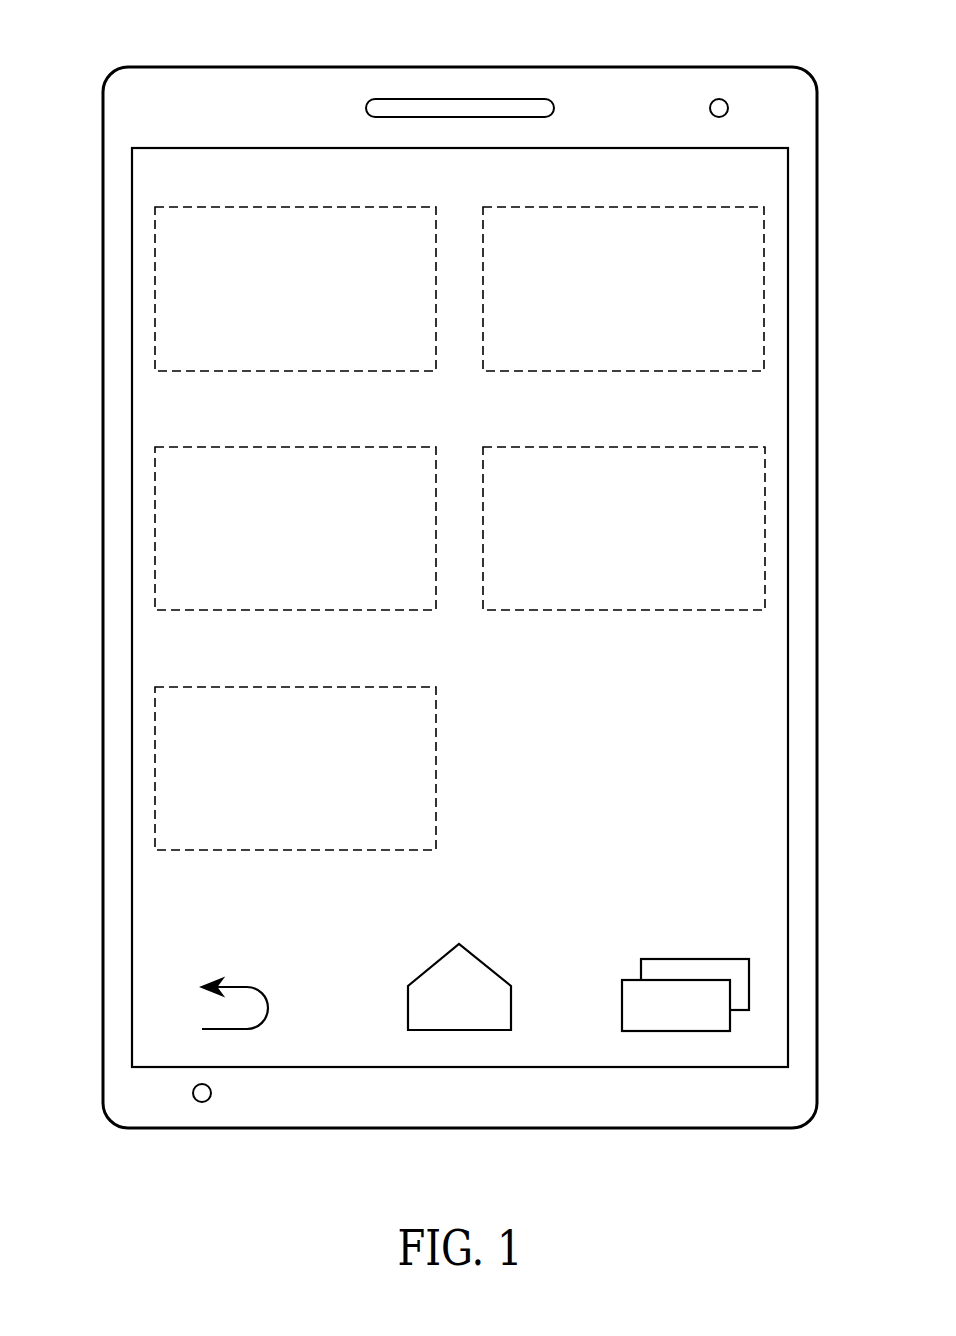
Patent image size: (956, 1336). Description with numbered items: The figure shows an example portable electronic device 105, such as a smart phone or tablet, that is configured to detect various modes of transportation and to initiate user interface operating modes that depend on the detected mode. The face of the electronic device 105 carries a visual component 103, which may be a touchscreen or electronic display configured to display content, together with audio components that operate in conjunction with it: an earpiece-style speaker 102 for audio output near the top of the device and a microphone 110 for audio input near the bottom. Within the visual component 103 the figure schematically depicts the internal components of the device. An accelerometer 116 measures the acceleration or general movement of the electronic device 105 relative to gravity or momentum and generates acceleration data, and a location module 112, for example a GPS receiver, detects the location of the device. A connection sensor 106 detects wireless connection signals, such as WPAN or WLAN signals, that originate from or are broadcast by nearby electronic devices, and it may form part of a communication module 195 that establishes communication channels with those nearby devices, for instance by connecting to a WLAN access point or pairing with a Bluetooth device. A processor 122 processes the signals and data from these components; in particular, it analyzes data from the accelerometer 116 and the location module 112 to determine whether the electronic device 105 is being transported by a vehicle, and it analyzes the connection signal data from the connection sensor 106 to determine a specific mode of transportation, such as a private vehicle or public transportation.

The electronic device 105 is at (280, 66).
The speaker 102 is at (453, 108).
The visual component 103 is at (608, 695).
The microphone 110 is at (197, 1100).
The accelerometer 116 is at (412, 207).
The location module 112 is at (726, 207).
The connection sensor 106 is at (413, 447).
The communication module 195 is at (725, 447).
The processor 122 is at (413, 687).